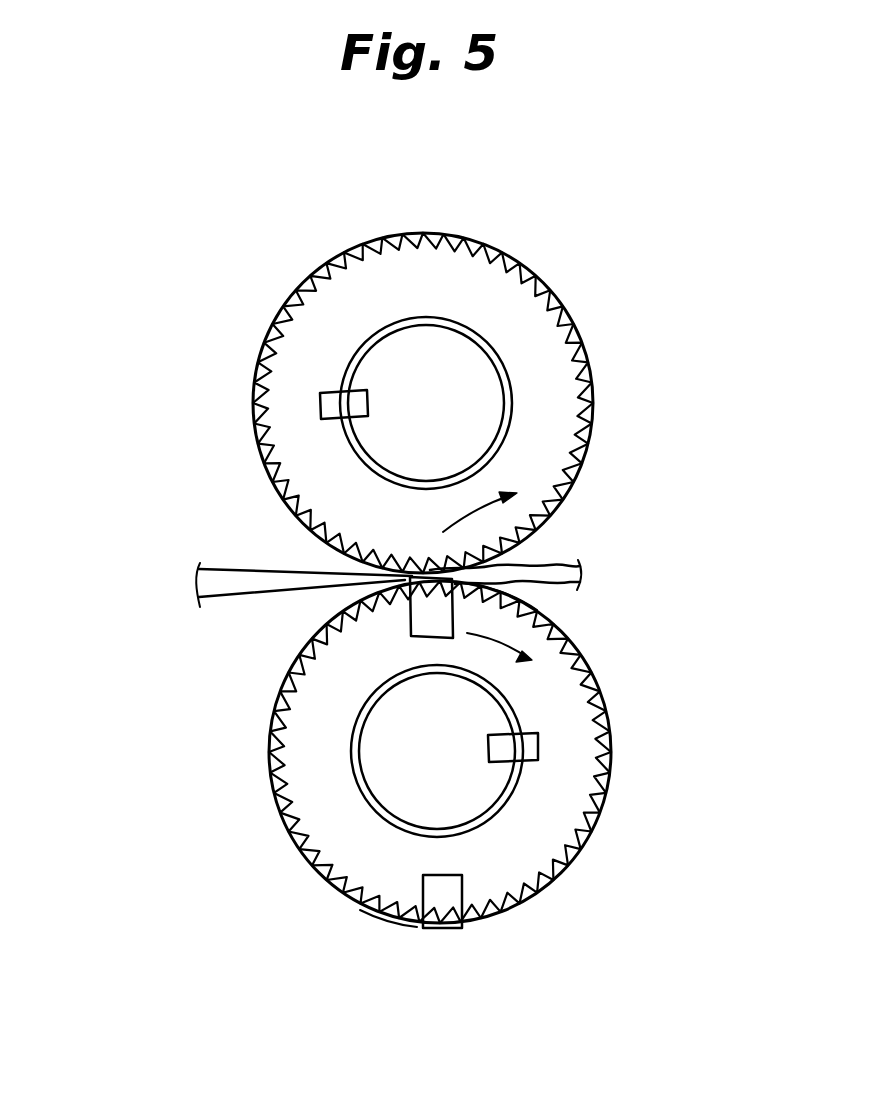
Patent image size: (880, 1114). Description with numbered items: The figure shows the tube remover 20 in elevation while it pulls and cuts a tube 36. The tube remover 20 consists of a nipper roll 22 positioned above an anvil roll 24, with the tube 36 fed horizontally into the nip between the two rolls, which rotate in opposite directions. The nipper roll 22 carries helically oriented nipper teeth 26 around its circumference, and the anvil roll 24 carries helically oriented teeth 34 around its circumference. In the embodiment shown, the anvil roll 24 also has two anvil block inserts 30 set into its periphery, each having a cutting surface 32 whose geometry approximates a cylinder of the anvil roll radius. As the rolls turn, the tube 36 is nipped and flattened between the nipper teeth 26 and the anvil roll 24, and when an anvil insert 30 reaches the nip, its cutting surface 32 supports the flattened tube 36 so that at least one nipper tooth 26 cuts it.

The tube remover 20 is at (244, 270).
The nipper roll 22 is at (515, 252).
The anvil roll 24 is at (607, 668).
The nipper teeth 26 is at (567, 318).
The anvil block inserts 30 is at (426, 628).
The cutting surface 32 is at (410, 578).
The teeth 34 is at (610, 740).
The tube 36 is at (196, 578).